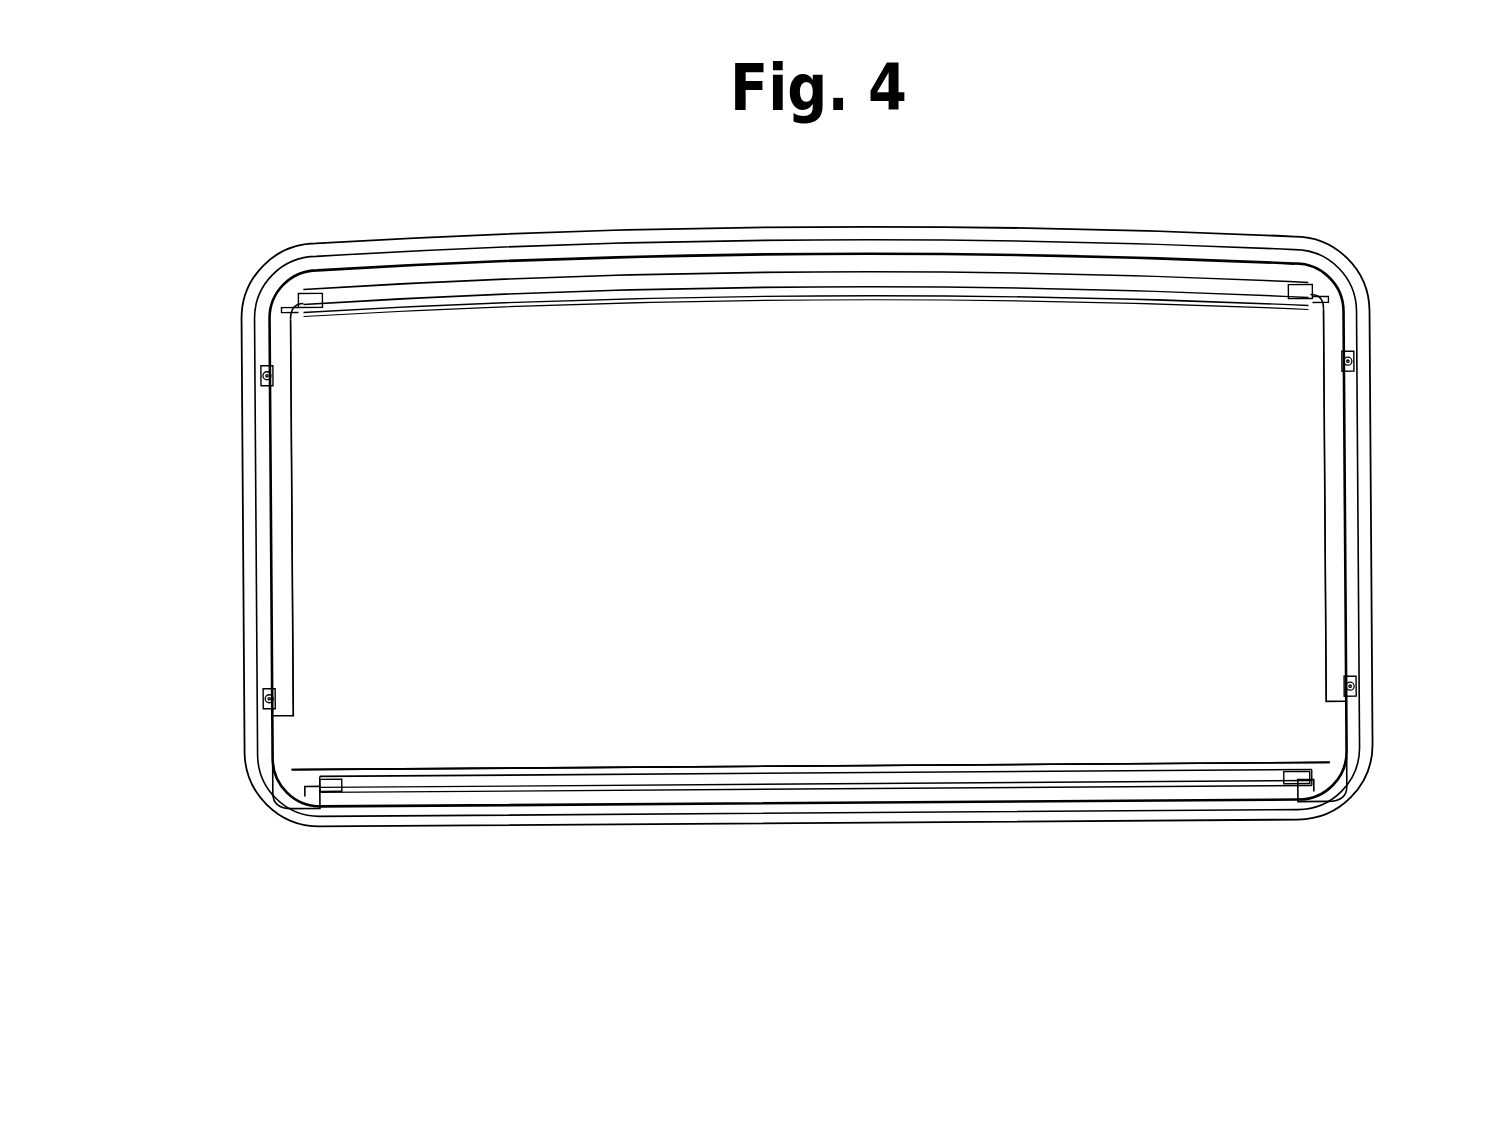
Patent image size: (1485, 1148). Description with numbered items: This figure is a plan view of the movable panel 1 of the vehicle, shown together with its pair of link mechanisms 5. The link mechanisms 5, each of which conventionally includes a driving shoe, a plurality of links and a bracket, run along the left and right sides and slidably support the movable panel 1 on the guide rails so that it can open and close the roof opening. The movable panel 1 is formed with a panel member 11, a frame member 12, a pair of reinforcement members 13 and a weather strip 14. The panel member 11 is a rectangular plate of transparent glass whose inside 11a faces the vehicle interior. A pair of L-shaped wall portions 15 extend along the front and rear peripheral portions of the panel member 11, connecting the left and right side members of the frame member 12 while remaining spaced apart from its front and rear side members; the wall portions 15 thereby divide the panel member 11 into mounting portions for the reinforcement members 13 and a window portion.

The movable panel 1 is at (1387, 659).
The link mechanism 5 is at (266, 437).
The panel member 11 is at (977, 643).
The inside 11a is at (618, 745).
The frame member 12 is at (1337, 802).
The reinforcement member 13 is at (882, 270).
The weather strip 14 is at (1379, 335).
The wall portion 15 is at (762, 295).